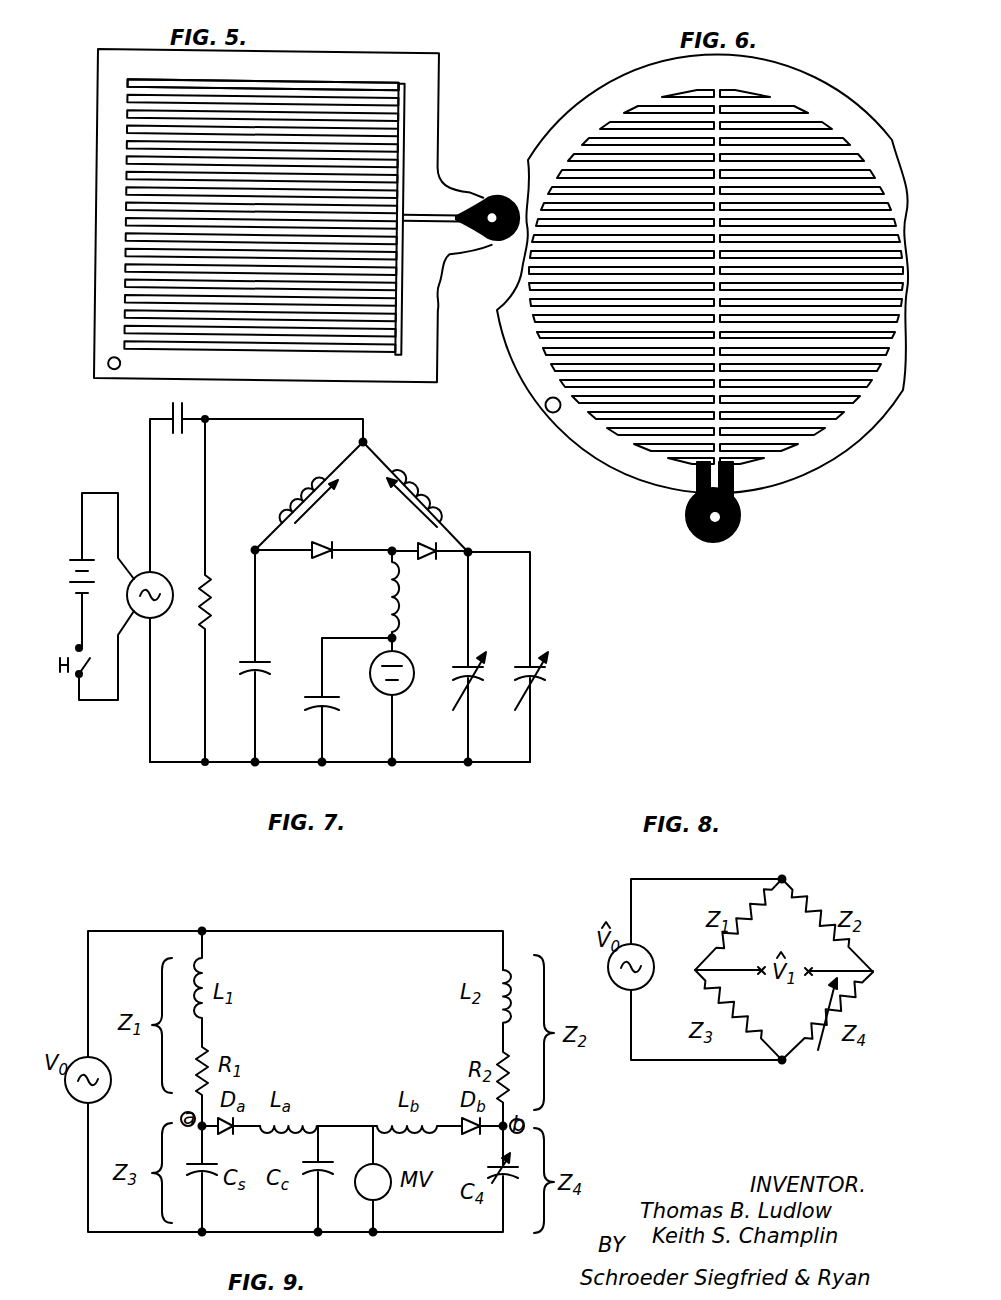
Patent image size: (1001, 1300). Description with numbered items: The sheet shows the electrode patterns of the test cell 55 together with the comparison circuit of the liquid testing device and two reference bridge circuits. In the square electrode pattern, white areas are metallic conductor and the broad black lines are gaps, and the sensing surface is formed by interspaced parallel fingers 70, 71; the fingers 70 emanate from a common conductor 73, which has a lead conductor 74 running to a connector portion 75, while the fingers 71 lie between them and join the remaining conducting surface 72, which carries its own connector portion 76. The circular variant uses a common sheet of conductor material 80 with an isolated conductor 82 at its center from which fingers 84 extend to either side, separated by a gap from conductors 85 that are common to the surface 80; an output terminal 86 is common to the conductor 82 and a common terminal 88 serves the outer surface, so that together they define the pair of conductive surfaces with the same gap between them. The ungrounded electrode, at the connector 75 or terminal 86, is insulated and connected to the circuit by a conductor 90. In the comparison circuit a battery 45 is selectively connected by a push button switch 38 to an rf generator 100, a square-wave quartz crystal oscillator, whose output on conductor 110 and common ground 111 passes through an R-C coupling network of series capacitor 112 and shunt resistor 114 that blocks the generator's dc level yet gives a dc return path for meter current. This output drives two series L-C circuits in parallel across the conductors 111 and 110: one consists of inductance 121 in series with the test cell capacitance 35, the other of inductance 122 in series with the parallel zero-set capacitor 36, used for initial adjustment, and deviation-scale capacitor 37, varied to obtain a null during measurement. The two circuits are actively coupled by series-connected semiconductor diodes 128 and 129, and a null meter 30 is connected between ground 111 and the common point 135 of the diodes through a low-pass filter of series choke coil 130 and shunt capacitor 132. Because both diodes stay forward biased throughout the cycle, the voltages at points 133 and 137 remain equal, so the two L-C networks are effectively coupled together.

In FIG. 5, the sensor probe 55 is at (138, 41).
In FIG. 6, the sensor probe 55 is at (583, 98).
In FIG. 5, the fingers 70 is at (312, 187).
In FIG. 5, the fingers 71 is at (335, 95).
In FIG. 5, the conductor surface 72 is at (99, 291).
In FIG. 5, the common conductor 73 is at (399, 133).
In FIG. 5, the lead conductor 74 is at (452, 249).
In FIG. 5, the connector portion 75 is at (495, 193).
In FIG. 5, the connector portion 76 is at (112, 368).
In FIG. 6, the common sheet of conductor material 80 is at (813, 467).
In FIG. 6, the isolated conductor 82 is at (733, 490).
In FIG. 6, the fingers 84 is at (680, 462).
In FIG. 6, the conductors 85 is at (640, 452).
In FIG. 6, the output terminal 86 is at (735, 533).
In FIG. 6, the common terminal 88 is at (545, 408).
In FIG. 7, the null meter 30 is at (404, 656).
In FIG. 7, the test cell capacitance 35 is at (258, 660).
In FIG. 7, the zero-set capacitor 36 is at (472, 635).
In FIG. 7, the deviation-scale capacitor 37 is at (536, 633).
In FIG. 7, the push button switch 38 is at (97, 655).
In FIG. 7, the battery 45 is at (72, 560).
In FIG. 7, the conductor 90 is at (256, 583).
In FIG. 7, the rf generator 100 is at (160, 622).
In FIG. 7, the conductor 110 is at (278, 421).
In FIG. 7, the common ground 111 is at (163, 760).
In FIG. 7, the series capacitor 112 is at (180, 413).
In FIG. 7, the shunt resistor 114 is at (207, 610).
In FIG. 7, the inductance 121 is at (322, 473).
In FIG. 7, the inductance 122 is at (425, 486).
In FIG. 7, the semiconductor diode 128 is at (320, 541).
In FIG. 7, the semiconductor diode 129 is at (416, 542).
In FIG. 7, the series choke coil 130 is at (404, 597).
In FIG. 7, the shunt capacitor 132 is at (330, 694).
In FIG. 7, the point 133 is at (256, 548).
In FIG. 7, the common point 135 is at (388, 558).
In FIG. 7, the point 137 is at (474, 547).